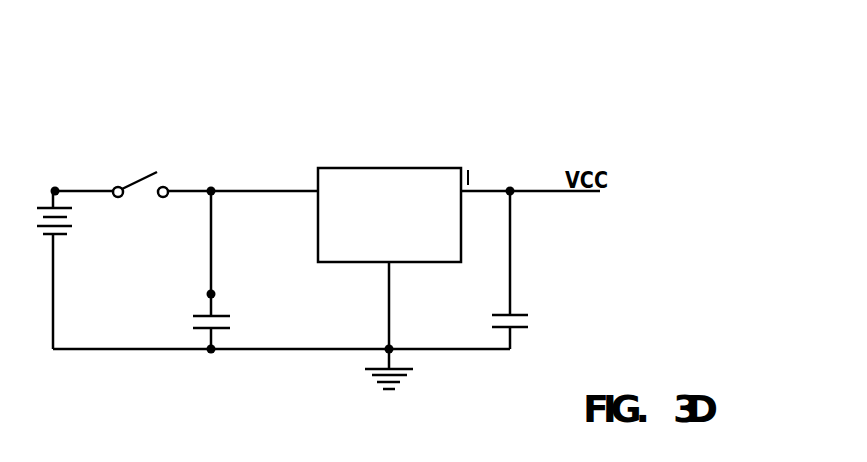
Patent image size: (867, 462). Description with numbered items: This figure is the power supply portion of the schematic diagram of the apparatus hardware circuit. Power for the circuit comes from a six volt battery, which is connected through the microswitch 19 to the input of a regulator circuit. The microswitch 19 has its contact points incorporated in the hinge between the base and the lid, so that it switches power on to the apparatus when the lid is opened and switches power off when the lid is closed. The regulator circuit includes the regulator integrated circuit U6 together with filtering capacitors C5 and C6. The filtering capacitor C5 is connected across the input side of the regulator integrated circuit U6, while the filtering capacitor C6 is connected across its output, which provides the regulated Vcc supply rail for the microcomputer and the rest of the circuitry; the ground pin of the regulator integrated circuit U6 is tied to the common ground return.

The microswitch 19 is at (75, 167).
The regulator integrated circuit U6 is at (382, 207).
The filtering capacitor C5 is at (229, 270).
The filtering capacitor C6 is at (529, 270).